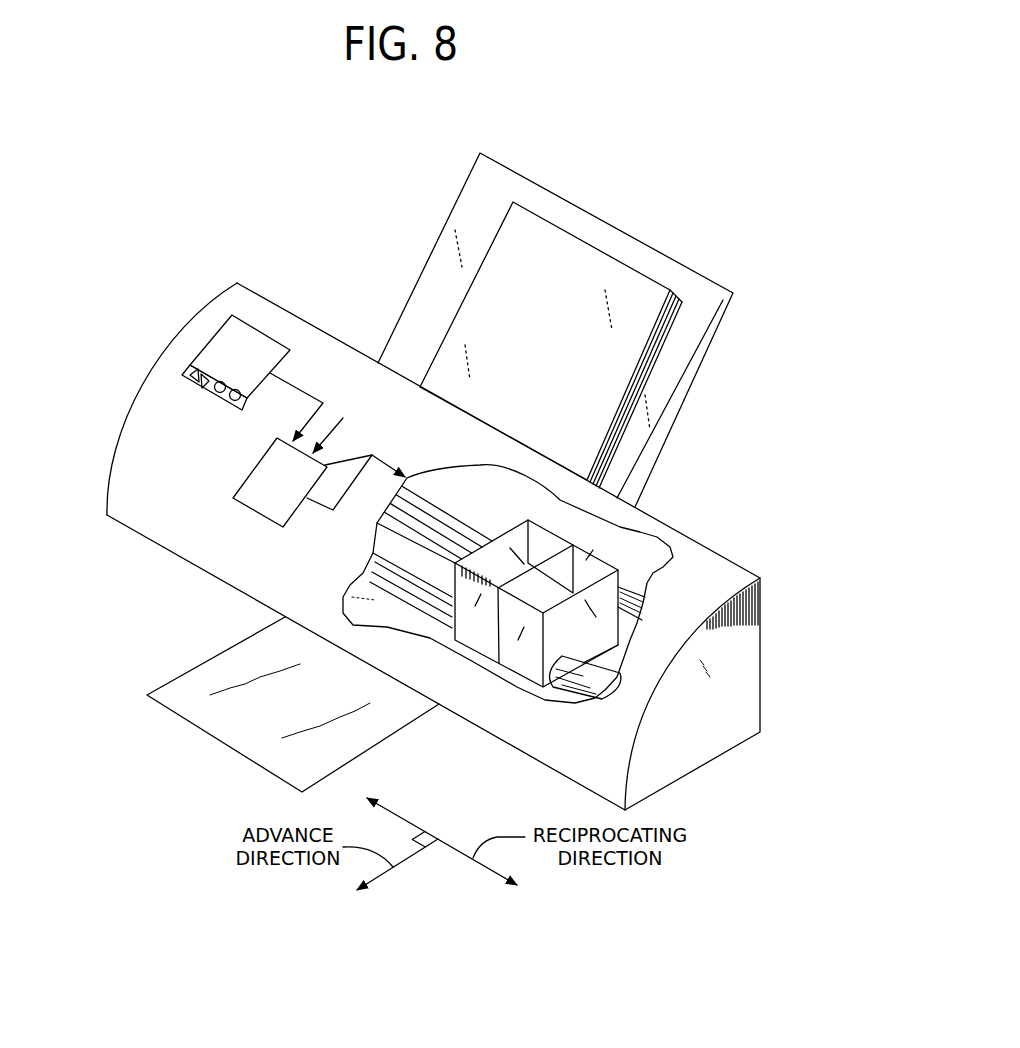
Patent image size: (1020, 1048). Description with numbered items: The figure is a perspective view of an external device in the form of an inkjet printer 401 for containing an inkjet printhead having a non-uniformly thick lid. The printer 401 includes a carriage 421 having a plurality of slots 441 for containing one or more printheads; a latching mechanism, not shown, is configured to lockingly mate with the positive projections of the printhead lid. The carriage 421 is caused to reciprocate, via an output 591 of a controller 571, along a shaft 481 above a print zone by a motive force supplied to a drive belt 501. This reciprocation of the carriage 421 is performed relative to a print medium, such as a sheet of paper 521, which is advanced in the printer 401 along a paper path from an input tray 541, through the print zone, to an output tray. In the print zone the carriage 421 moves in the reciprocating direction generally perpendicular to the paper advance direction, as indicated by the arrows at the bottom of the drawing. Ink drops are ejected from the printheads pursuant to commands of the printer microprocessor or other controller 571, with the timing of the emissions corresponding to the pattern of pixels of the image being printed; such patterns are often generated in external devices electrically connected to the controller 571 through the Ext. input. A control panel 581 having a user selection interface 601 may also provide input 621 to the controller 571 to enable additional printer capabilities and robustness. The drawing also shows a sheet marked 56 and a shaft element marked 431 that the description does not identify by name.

The inkjet printer 401 is at (158, 300).
The control panel 581 is at (258, 332).
The user selection interface 601 is at (205, 388).
The input 621 is at (310, 418).
The controller 571 is at (253, 505).
The output 591 is at (316, 507).
The recording medium 56 is at (212, 680).
The input tray 541 is at (672, 373).
The sheet of paper 521 is at (556, 346).
The slots 441 is at (543, 537).
The carriage 421 is at (565, 590).
The guide shaft 431 is at (390, 607).
The shaft 481 is at (578, 684).
The drive belt 501 is at (635, 600).